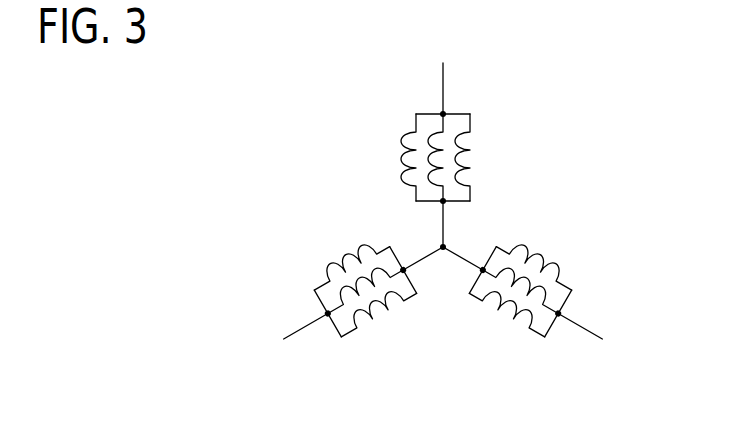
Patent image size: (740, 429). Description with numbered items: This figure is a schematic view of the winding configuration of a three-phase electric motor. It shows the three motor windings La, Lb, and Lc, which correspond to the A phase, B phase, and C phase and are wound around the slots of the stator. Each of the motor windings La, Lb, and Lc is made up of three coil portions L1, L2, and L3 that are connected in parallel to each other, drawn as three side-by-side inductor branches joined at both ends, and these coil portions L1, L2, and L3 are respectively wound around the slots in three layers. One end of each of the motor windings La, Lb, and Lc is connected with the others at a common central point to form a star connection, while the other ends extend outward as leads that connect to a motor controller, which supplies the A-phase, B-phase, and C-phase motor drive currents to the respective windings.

The A-phase motor winding La is at (484, 94).
The B-phase motor winding Lb is at (595, 272).
The C-phase motor winding Lc is at (284, 278).
The first coil portion L1 is at (400, 153).
The second coil portion L2 is at (433, 164).
The third coil portion L3 is at (457, 147).